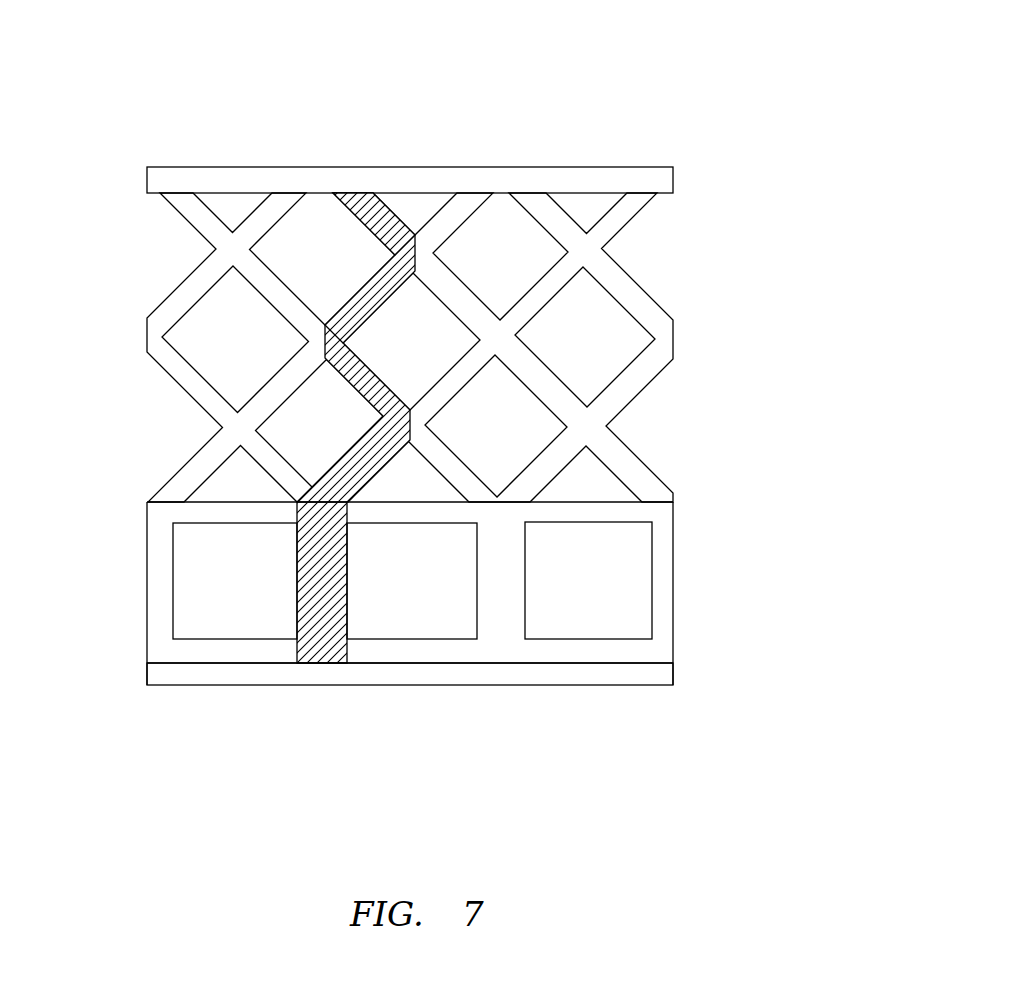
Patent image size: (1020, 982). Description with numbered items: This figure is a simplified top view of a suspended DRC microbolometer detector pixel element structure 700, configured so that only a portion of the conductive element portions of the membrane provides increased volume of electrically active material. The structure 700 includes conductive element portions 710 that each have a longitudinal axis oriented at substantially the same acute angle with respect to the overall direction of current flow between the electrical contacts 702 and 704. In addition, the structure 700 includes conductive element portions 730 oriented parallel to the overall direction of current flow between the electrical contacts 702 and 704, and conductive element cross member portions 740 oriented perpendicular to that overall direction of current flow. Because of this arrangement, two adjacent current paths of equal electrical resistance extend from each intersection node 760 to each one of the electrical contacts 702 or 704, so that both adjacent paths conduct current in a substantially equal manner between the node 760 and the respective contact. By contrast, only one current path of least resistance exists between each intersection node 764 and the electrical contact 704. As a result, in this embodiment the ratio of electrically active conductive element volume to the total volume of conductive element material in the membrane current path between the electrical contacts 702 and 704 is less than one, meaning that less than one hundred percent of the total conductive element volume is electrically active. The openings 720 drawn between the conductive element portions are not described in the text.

The microbolometer detector pixel element structure 700 is at (690, 42).
The electrical contact 702 is at (594, 167).
The electrical contact 704 is at (593, 686).
The conductive element portions 710 is at (192, 389).
The openings 720 is at (238, 244).
The conductive element portions 730 is at (354, 580).
The conductive element cross member portions 740 is at (650, 582).
The intersection node 760 is at (592, 422).
The intersection node 764 is at (160, 507).